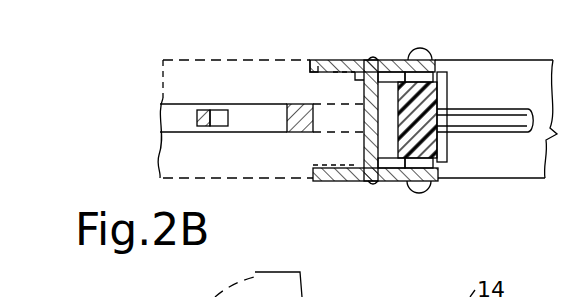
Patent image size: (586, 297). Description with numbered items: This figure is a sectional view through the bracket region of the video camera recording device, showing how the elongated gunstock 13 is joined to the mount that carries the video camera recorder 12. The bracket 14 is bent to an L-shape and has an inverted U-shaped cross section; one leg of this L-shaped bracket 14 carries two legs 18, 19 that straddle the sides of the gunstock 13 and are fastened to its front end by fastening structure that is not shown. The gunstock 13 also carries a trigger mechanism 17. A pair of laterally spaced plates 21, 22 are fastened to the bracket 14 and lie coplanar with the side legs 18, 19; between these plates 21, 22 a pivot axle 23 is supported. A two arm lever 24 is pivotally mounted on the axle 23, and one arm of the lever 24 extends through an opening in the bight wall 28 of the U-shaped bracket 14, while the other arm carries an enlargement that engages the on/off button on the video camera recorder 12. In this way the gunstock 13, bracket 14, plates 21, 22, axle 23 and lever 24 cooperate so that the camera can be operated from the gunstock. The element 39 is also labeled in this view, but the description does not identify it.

The gunstock 13 is at (357, 98).
The bracket 14 is at (344, 60).
The trigger mechanism 17 is at (202, 128).
The leg 18 is at (333, 60).
The leg 19 is at (357, 170).
The plate 21 is at (393, 66).
The plate 22 is at (391, 182).
The pivot axle 23 is at (432, 74).
The two arm lever 24 is at (443, 93).
The bight wall 28 is at (368, 96).
The video camera recorder 12 is at (305, 278).
The seal 39 is at (424, 296).